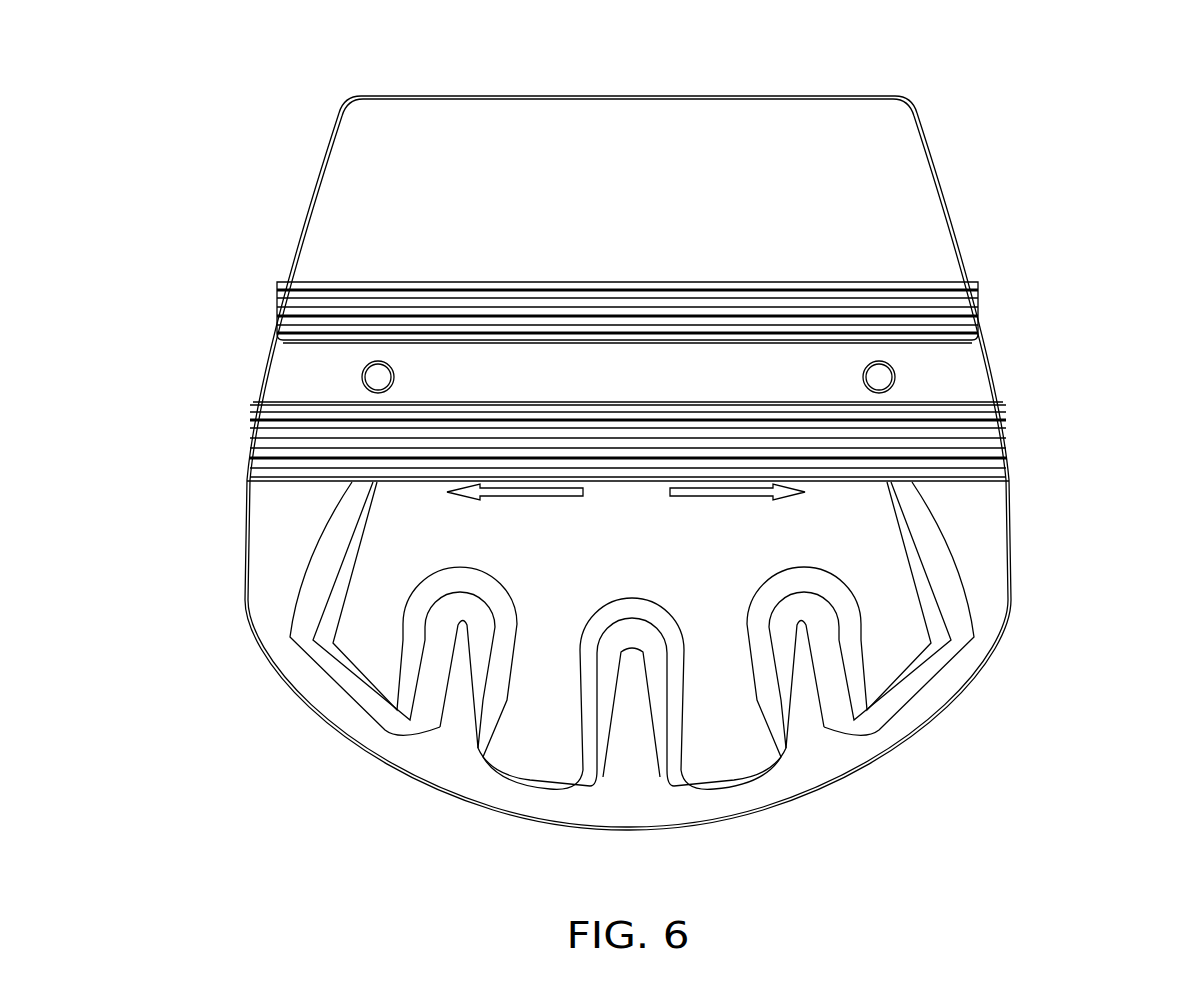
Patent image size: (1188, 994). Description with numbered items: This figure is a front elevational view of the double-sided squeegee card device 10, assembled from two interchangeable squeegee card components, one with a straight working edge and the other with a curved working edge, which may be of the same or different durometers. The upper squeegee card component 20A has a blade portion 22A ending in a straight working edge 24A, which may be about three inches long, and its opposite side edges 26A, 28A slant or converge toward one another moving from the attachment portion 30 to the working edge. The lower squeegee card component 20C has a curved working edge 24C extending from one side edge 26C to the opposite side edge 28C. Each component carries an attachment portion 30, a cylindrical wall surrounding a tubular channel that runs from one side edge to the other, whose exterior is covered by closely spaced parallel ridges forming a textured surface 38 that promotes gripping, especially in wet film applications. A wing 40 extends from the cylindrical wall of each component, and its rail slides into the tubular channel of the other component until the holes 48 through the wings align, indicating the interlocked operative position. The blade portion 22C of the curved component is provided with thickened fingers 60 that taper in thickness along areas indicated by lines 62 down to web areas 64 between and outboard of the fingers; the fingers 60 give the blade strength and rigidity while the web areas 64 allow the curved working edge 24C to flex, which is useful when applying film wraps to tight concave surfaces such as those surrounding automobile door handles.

The double-sided squeegee card device 10 is at (1085, 115).
The squeegee card component 20A is at (970, 240).
The blade portion 22A is at (445, 193).
The straight working edge 24A is at (612, 95).
The side edge 26A is at (304, 236).
The side edge 28A is at (940, 180).
The attachment portion 30 is at (262, 302).
The textured surface 38 is at (942, 318).
The wing 40 is at (989, 356).
The holes 48 is at (394, 378).
The squeegee card component 20C is at (1025, 562).
The blade portion 22C is at (415, 553).
The curved working edge 24C is at (797, 803).
The side edge 26C is at (1017, 520).
The side edge 28C is at (244, 527).
The fingers 60 is at (368, 658).
The lines 62 is at (368, 700).
The web areas 64 is at (441, 728).